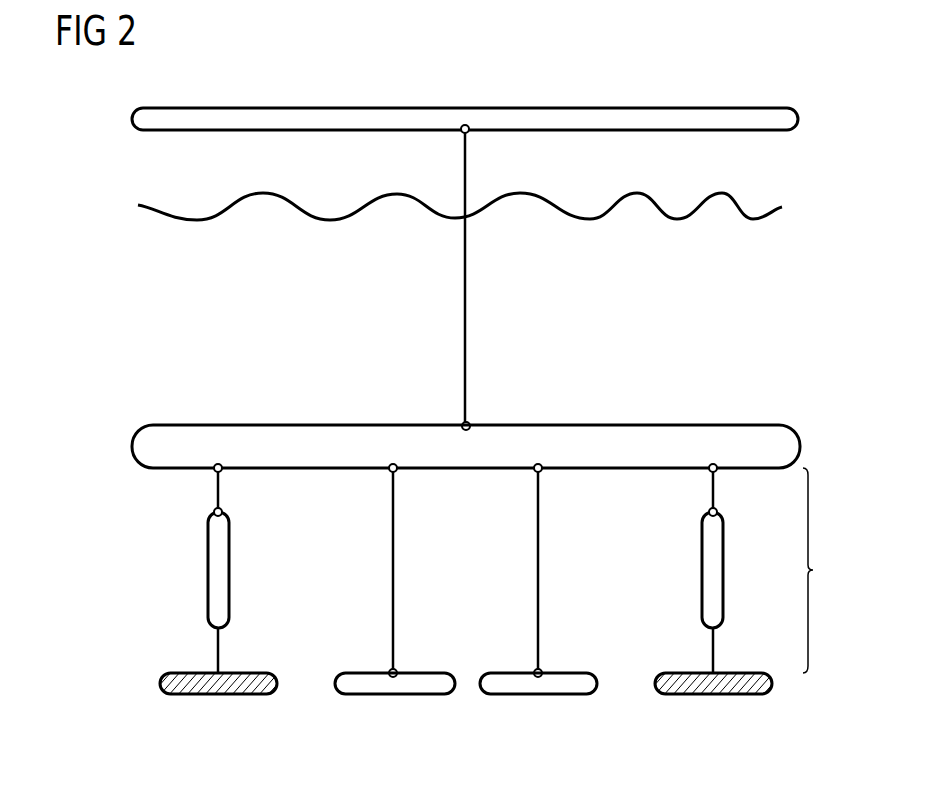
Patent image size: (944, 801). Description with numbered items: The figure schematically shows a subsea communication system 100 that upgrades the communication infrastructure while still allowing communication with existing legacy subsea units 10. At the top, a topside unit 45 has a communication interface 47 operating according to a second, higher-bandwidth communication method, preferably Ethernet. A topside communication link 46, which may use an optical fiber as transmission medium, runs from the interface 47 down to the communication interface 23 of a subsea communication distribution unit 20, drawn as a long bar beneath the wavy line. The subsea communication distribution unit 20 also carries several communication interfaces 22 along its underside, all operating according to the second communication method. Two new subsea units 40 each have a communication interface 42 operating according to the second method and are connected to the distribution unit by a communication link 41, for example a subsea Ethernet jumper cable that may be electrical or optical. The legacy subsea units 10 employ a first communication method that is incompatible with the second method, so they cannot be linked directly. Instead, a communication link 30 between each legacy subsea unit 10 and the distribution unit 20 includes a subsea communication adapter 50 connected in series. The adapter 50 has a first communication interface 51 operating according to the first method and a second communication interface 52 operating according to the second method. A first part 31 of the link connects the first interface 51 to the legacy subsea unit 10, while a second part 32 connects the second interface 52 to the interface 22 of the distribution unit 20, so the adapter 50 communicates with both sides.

The subsea communication system 100 is at (110, 418).
The legacy subsea unit 10 is at (218, 697).
The subsea communication distribution unit 20 is at (292, 424).
The communication interface 22 is at (221, 471).
The communication interface 23 is at (462, 423).
The communication link 30 is at (825, 570).
The first part of the communication link 31 is at (216, 652).
The second part of the communication link 32 is at (216, 491).
The new subsea unit 40 is at (393, 697).
The communication link 41 is at (392, 570).
The communication interface 42 is at (389, 670).
The topside unit 45 is at (372, 107).
The topside communication link 46 is at (464, 290).
The communication interface 47 is at (469, 133).
The subsea communication adapter 50 is at (207, 570).
The first communication interface 51 is at (716, 632).
The second communication interface 52 is at (718, 515).